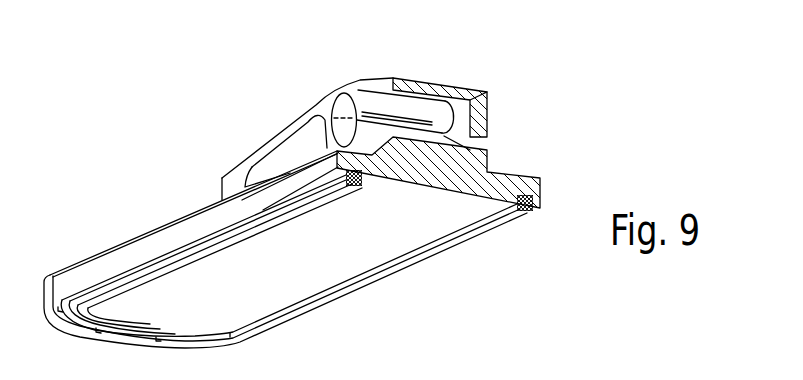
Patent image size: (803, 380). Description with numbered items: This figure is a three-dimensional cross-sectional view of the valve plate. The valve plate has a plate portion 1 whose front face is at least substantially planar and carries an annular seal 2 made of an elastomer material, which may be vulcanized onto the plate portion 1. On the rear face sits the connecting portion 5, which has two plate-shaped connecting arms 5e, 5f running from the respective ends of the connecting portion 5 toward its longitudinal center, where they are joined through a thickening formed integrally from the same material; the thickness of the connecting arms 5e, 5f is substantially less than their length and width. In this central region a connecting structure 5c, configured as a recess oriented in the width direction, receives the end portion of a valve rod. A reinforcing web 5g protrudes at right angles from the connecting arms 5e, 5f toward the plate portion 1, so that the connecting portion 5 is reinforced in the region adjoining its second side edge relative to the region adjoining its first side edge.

The plate portion 1 is at (60, 246).
The annular seal 2 is at (460, 243).
The connecting portion 5 is at (494, 87).
The connecting structure 5c is at (345, 110).
The connecting arm 5e is at (382, 88).
The connecting arm 5f is at (278, 140).
The reinforcing web 5g is at (450, 120).